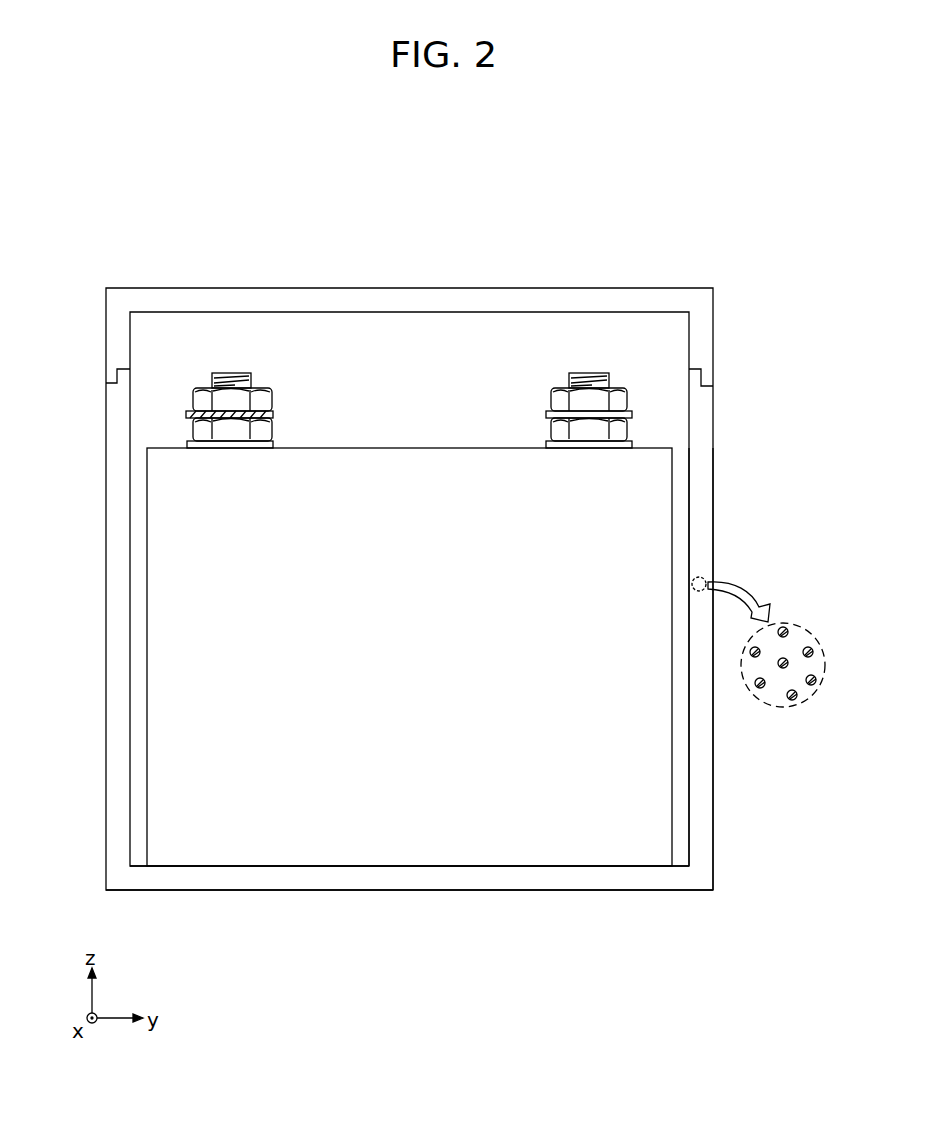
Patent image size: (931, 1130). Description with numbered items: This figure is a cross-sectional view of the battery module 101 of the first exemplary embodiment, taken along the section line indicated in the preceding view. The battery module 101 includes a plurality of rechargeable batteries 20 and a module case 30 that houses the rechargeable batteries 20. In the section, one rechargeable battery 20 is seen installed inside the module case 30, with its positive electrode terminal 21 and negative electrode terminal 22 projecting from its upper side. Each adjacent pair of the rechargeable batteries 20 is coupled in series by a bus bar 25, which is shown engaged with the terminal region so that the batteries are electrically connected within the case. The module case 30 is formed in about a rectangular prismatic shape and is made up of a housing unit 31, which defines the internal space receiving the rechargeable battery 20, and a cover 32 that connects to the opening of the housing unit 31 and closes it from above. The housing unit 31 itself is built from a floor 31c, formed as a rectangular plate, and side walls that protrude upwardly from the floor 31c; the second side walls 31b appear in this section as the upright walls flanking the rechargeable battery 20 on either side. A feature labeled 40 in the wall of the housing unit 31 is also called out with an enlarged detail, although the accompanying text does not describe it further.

The battery module 101 is at (438, 175).
The rechargeable battery 20 is at (147, 705).
The positive electrode terminal 21 is at (228, 372).
The negative electrode terminal 22 is at (598, 372).
The bus bar 25 is at (632, 414).
The module case 30 is at (652, 259).
The housing unit 31 is at (700, 507).
The second side wall 31b is at (700, 820).
The floor 31c is at (430, 880).
The cover 32 is at (376, 300).
The vent hole 40 is at (792, 697).